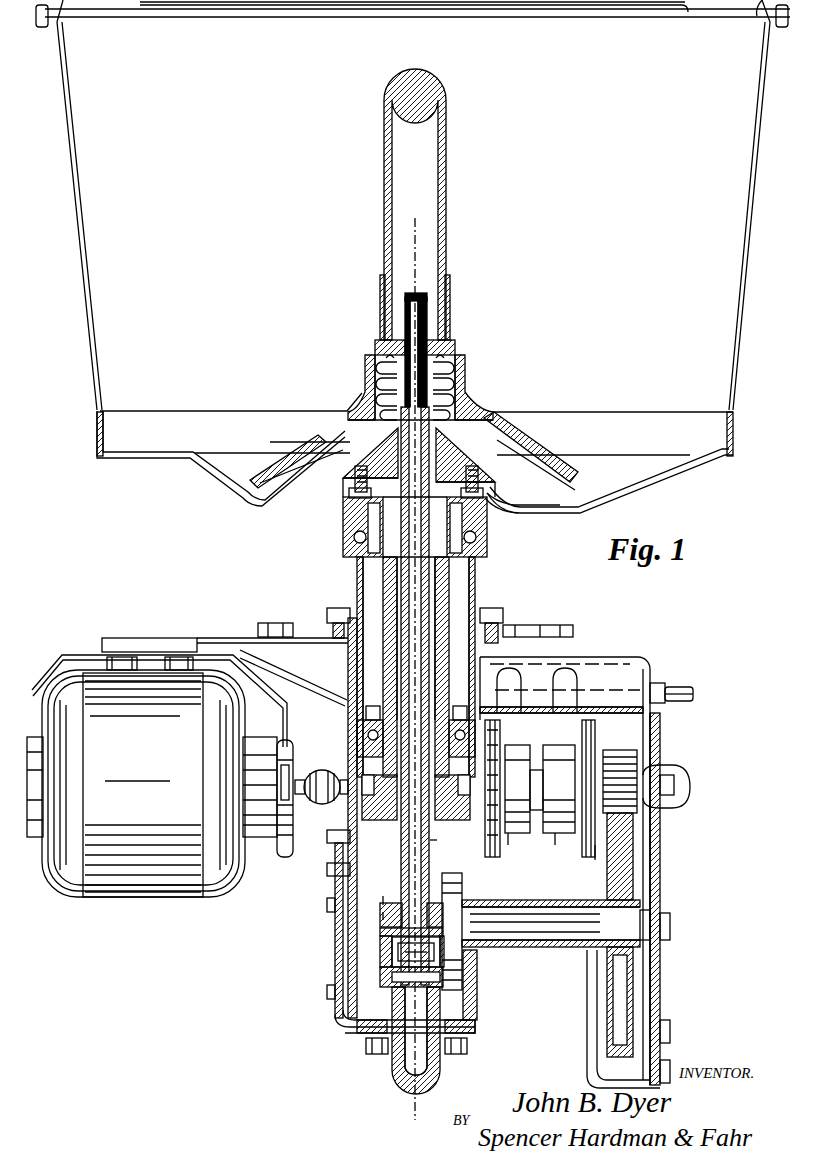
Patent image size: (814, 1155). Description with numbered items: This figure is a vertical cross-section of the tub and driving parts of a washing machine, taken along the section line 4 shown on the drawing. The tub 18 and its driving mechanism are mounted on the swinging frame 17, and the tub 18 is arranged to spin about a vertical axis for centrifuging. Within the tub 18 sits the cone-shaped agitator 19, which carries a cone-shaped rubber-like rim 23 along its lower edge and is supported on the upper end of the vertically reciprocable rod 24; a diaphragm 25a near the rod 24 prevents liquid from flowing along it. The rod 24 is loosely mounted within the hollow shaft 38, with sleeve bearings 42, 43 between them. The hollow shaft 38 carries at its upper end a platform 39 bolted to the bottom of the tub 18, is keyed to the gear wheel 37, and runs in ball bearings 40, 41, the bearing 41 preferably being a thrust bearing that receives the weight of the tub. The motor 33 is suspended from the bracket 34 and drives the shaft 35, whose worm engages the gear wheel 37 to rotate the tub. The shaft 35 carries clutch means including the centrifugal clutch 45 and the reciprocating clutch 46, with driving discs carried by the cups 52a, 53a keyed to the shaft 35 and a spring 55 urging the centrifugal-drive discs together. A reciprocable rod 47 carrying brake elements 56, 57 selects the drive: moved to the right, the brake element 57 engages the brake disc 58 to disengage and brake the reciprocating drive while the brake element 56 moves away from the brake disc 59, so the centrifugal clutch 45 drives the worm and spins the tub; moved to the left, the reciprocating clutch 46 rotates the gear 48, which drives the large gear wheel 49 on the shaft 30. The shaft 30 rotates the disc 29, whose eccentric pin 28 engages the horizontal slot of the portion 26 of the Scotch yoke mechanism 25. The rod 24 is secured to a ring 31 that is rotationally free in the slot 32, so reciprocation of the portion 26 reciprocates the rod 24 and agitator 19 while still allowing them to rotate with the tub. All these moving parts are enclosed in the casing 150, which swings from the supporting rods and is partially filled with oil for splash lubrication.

The section line 4- 4 is at (420, 226).
The frame 17 is at (520, 628).
The tub 18 is at (87, 312).
The cone-shaped agitator 19 is at (461, 357).
The rim 23 is at (553, 458).
The rod 24 is at (432, 843).
The Scotch yoke mechanism 25 is at (383, 957).
The diaphragm 25a is at (470, 400).
The portion 26 is at (383, 980).
The pin 28 is at (383, 940).
The disc 29 is at (465, 888).
The shaft 30 is at (528, 910).
The ring 31 is at (383, 918).
The slot 32 is at (383, 903).
The motor 33 is at (125, 890).
The bracket 34 is at (151, 647).
The shaft 35 is at (310, 772).
The gear wheel 37 is at (396, 808).
The hollow shaft 38 is at (478, 578).
The platform 39 is at (492, 497).
The ball bearing 40 is at (488, 541).
The ball bearing 41 is at (360, 726).
The sleeve bearing 42 is at (403, 832).
The sleeve bearing 43 is at (352, 490).
The centrifugal clutch 45 is at (510, 745).
The reciprocating clutch 46 is at (555, 745).
The reciprocable rod 47 is at (672, 690).
The gear 48 is at (620, 766).
The large gear wheel 49 is at (630, 862).
The cup 52a is at (558, 835).
The cup 53a is at (518, 835).
The spring 55 is at (600, 748).
The brake element 56 is at (517, 789).
The brake element 57 is at (552, 789).
The brake disc 58 is at (594, 860).
The brake disc 59 is at (487, 850).
The casing 150 is at (660, 905).